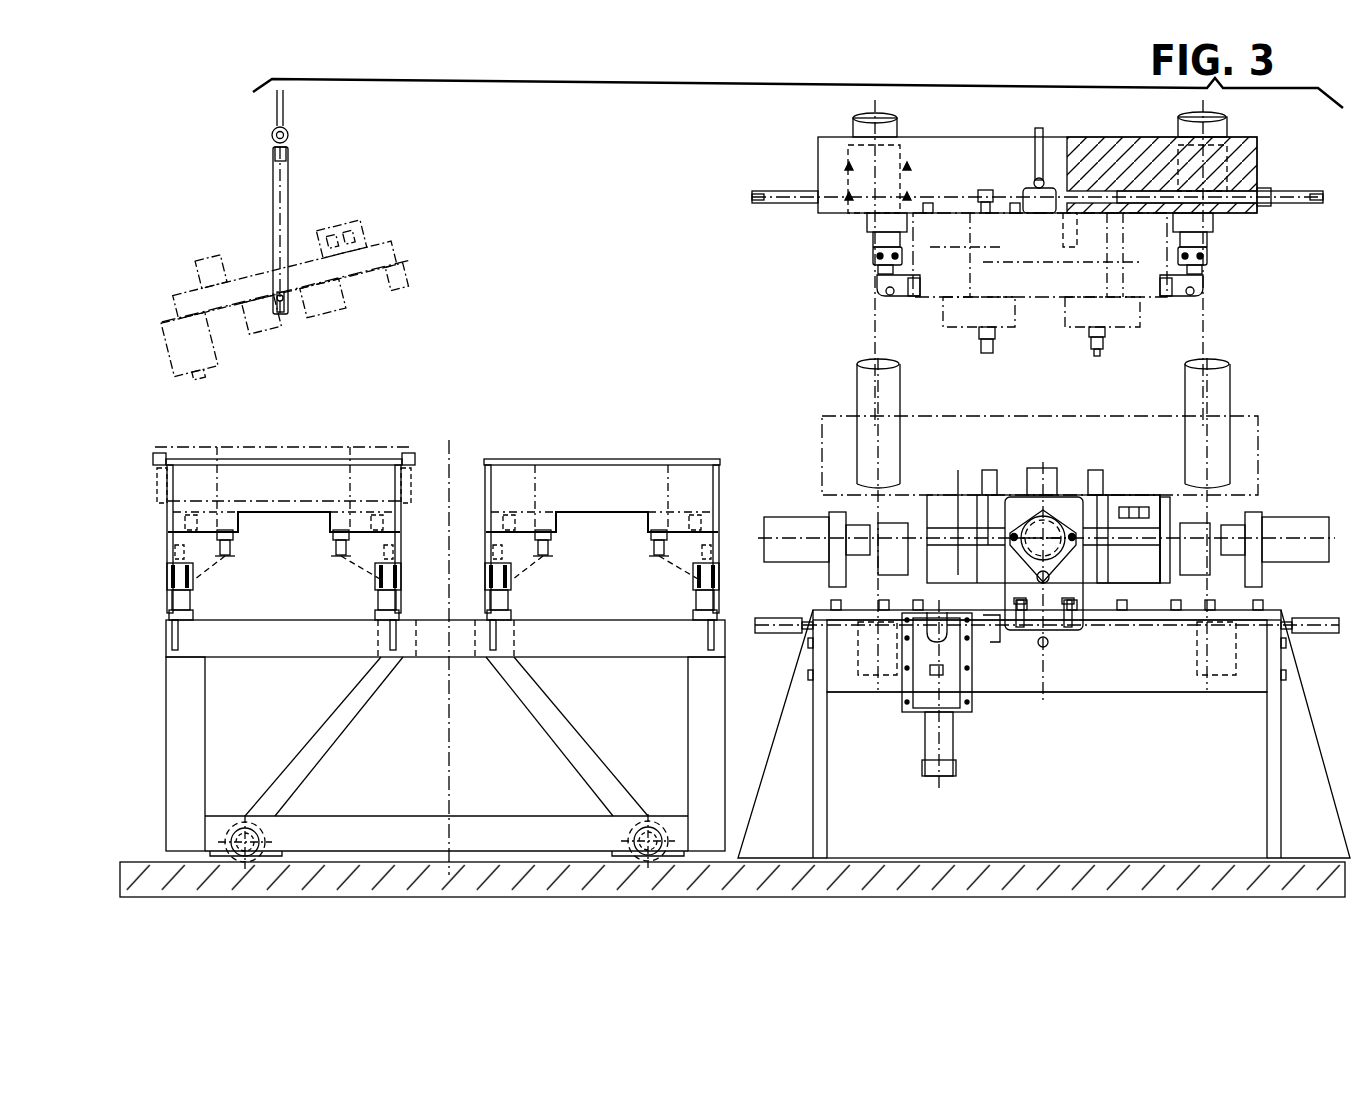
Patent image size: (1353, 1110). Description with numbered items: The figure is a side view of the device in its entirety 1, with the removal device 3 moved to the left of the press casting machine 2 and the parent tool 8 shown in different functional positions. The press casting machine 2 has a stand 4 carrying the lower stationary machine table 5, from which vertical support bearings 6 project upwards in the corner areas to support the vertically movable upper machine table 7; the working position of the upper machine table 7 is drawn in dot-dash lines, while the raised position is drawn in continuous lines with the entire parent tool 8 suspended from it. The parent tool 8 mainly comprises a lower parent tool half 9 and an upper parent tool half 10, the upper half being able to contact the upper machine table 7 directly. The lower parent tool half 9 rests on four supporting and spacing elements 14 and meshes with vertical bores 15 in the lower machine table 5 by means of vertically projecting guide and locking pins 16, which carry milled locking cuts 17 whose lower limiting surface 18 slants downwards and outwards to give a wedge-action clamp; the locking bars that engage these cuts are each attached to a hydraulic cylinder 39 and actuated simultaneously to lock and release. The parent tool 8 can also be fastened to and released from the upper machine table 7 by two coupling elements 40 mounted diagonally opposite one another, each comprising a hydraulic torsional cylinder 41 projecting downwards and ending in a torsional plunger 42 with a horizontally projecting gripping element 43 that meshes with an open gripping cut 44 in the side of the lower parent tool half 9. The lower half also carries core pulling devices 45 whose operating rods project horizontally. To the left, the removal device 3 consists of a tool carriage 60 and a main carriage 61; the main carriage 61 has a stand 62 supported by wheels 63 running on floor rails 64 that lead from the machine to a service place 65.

The device in its entirety 1 is at (669, 295).
The press casting machine 2 is at (1272, 120).
The removal device 3 is at (166, 637).
The stand 4 is at (1309, 708).
The lower stationary machine table 5 is at (988, 695).
The vertical support bearings 6 is at (860, 125).
The upper machine table 7 is at (1255, 150).
The parent tool 8 is at (959, 510).
The lower parent tool half 9 is at (1035, 280).
The upper parent tool half 10 is at (948, 227).
The supporting and spacing elements 14 is at (917, 297).
The vertical bores 15 is at (1082, 643).
The guide and locking pins 16 is at (1099, 330).
The milled locking cuts 17 is at (1099, 343).
The lower limiting surface 18 is at (1097, 349).
The hydraulic cylinder 39 is at (770, 194).
The coupling elements 40 is at (860, 268).
The hydraulic torsional cylinder 41 is at (872, 240).
The torsional plunger 42 is at (873, 273).
The gripping element 43 is at (877, 285).
The gripping cut 44 is at (912, 292).
The core pulling devices 45 is at (800, 489).
The tool carriage 60 is at (541, 458).
The main carriage 61 is at (166, 692).
The stand 62 is at (705, 688).
The wheels 63 is at (655, 834).
The floor rails 64 is at (128, 855).
The service place 65 is at (530, 350).